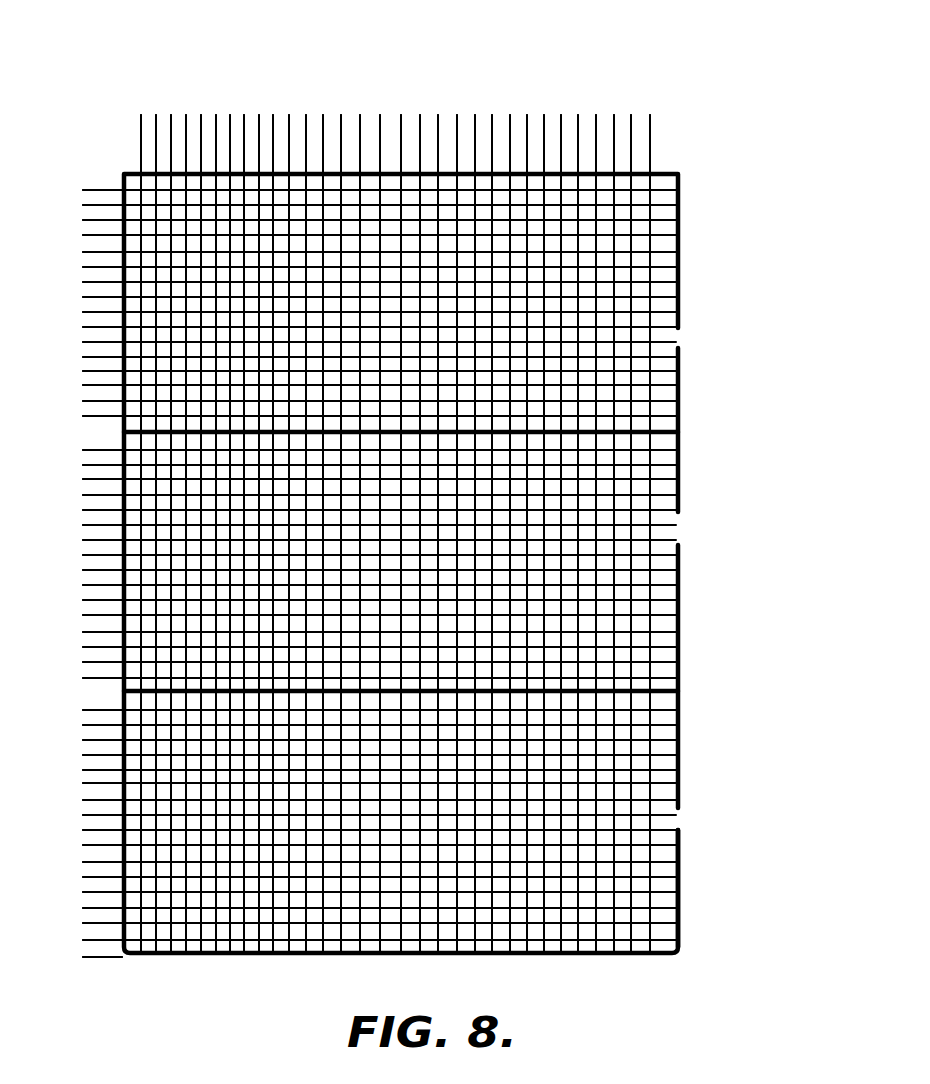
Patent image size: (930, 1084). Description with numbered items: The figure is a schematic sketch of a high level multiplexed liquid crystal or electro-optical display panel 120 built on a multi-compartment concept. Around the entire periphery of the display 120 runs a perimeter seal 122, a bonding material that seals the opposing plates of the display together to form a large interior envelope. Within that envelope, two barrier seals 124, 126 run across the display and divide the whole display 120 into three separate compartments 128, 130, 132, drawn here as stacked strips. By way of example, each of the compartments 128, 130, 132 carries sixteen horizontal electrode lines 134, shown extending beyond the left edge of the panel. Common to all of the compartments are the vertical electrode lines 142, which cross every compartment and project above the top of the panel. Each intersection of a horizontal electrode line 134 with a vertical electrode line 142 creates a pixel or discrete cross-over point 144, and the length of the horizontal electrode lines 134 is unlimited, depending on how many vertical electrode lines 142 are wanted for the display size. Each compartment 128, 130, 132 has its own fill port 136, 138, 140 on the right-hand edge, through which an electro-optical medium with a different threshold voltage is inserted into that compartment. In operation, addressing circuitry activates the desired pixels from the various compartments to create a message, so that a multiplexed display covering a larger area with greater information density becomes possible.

The display panel 120 is at (130, 68).
The perimeter seal 122 is at (683, 270).
The barrier seal 124 is at (640, 428).
The barrier seal 126 is at (625, 688).
The compartment 128 is at (175, 271).
The compartment 130 is at (195, 580).
The compartment 132 is at (195, 806).
The horizontal electrode lines 134 is at (92, 207).
The fill port 136 is at (680, 356).
The fill port 138 is at (678, 550).
The fill port 140 is at (681, 842).
The vertical electrode lines 142 is at (380, 126).
The pixels 144 is at (265, 207).